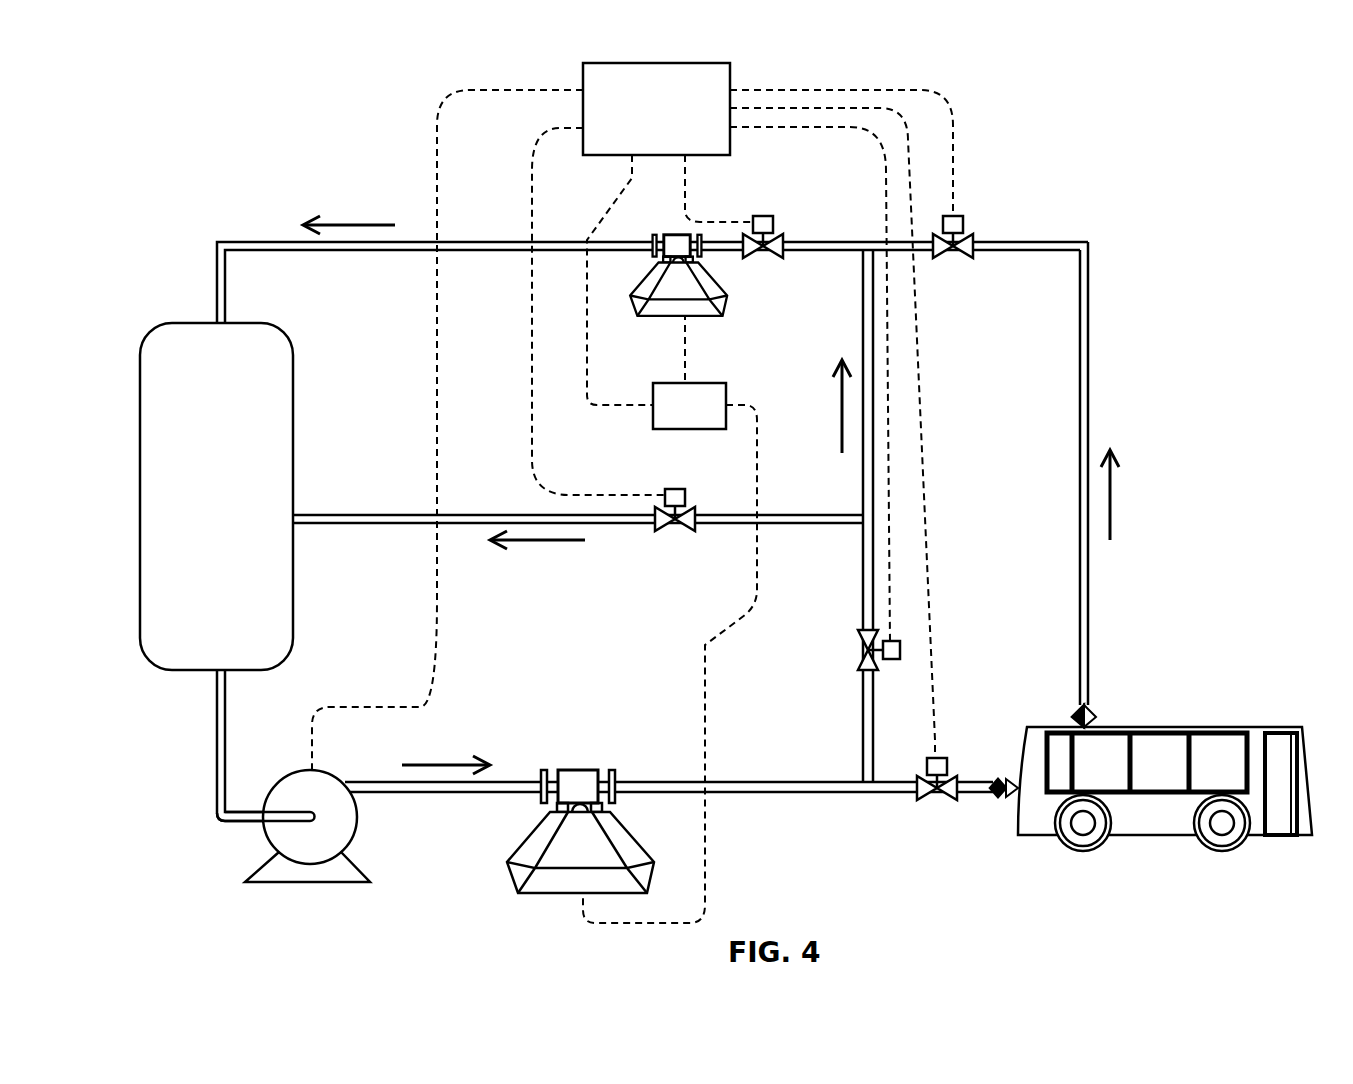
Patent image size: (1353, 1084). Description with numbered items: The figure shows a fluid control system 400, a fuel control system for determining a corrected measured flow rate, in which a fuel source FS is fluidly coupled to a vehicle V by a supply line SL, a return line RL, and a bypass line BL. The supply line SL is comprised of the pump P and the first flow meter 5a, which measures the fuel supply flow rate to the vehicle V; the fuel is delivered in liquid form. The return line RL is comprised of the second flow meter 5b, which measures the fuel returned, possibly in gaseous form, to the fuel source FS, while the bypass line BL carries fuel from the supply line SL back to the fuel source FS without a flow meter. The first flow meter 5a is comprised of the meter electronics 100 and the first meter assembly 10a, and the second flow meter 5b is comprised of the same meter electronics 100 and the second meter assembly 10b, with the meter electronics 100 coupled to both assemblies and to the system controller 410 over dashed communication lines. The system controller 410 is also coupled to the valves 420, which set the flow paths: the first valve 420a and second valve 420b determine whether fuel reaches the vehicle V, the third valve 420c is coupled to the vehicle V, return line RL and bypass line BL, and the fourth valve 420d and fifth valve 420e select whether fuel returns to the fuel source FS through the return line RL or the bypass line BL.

The fluid control system 400 is at (259, 71).
The system controller 410 is at (656, 109).
The valves 420 is at (1070, 181).
The first valve 420a is at (937, 800).
The second valve 420b is at (866, 652).
The third valve 420c is at (955, 250).
The fourth valve 420d is at (766, 216).
The fifth valve 420e is at (675, 525).
The meter electronics 100 is at (689, 406).
The first flow meter 5a is at (567, 804).
The second flow meter 5b is at (721, 294).
The first meter assembly 10a is at (549, 894).
The second meter assembly 10b is at (672, 314).
The return line RL is at (176, 229).
The bypass line BL is at (372, 484).
The supply line SL is at (177, 770).
The fuel source FS is at (216, 496).
The pump P is at (313, 881).
The vehicle V is at (1207, 700).